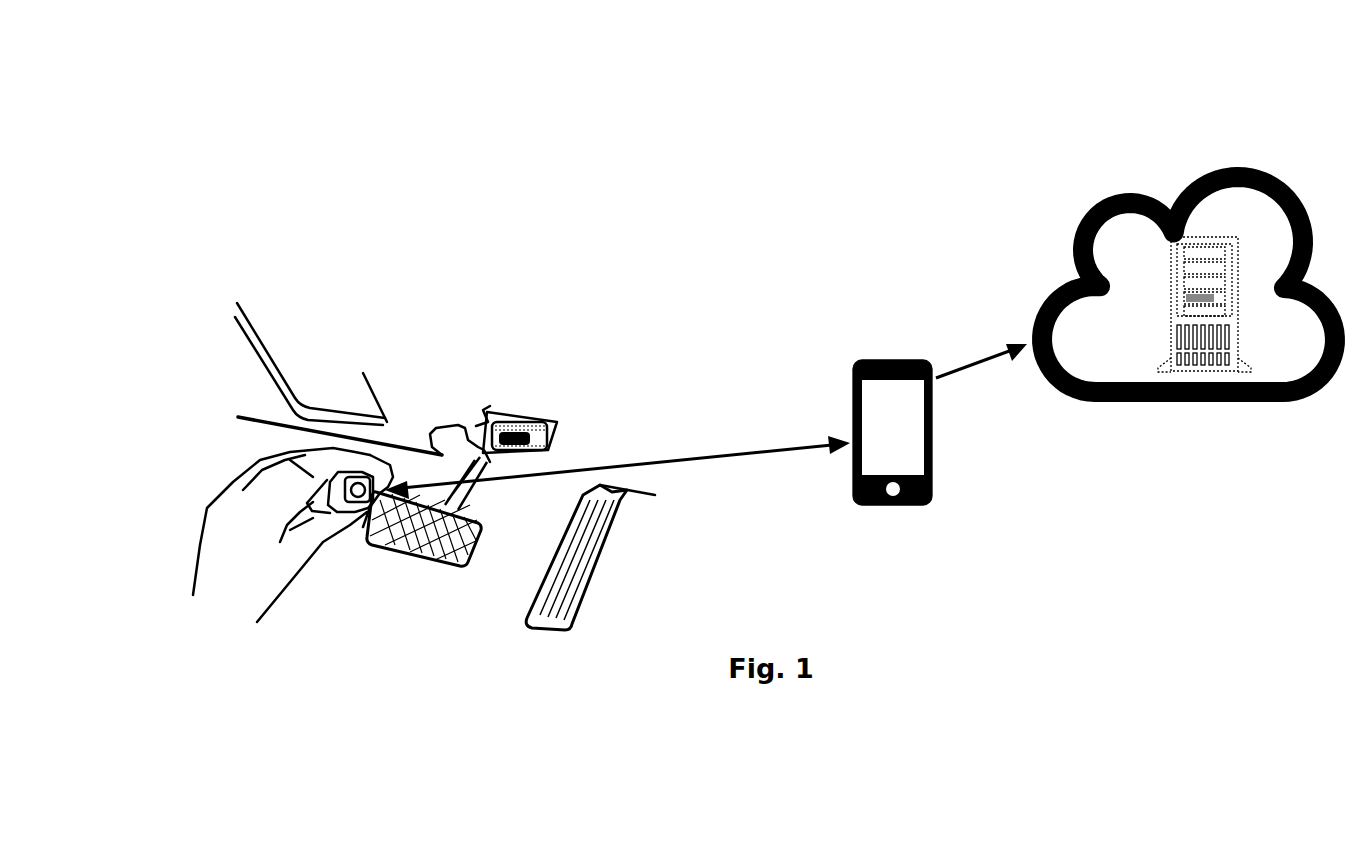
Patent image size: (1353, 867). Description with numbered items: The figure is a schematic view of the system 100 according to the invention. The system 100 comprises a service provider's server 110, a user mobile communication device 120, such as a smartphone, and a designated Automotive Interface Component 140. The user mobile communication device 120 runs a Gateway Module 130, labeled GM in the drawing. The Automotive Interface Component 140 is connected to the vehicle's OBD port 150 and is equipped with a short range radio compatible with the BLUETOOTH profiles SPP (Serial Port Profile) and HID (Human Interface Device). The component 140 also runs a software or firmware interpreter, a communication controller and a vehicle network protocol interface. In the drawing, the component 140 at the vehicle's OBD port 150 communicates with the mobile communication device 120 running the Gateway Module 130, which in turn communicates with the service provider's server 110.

The system 100 is at (768, 150).
The service provider's server 110 is at (1215, 372).
The user mobile communication device 120 is at (934, 494).
The Gateway Module 130 is at (912, 424).
The Automotive Interface Component 140 is at (352, 452).
The OBD port 150 is at (516, 413).